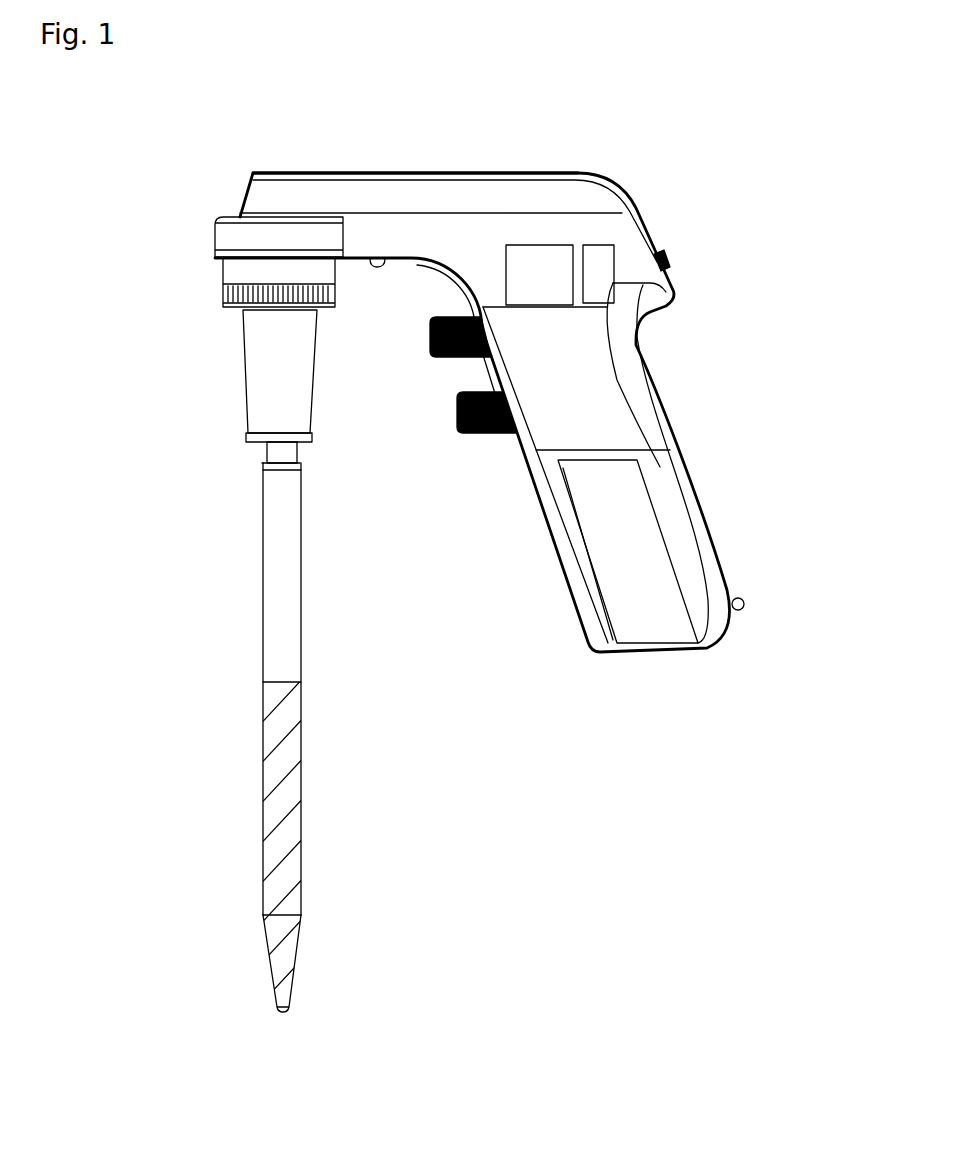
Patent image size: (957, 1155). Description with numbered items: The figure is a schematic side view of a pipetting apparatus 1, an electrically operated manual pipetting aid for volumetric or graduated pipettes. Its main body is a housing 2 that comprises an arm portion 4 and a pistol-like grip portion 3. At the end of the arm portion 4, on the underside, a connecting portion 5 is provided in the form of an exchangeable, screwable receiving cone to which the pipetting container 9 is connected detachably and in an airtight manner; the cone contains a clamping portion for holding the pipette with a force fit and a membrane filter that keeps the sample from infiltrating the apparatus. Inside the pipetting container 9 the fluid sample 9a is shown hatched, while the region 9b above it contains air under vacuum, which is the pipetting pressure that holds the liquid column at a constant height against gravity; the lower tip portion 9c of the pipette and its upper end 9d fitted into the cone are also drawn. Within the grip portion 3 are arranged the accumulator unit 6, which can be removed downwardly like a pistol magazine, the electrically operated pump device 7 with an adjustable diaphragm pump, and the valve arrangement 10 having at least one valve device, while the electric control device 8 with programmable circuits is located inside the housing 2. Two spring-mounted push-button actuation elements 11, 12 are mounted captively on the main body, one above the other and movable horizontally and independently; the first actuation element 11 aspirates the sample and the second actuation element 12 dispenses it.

The pipetting apparatus 1 is at (753, 131).
The housing 2 is at (630, 214).
The grip portion 3 is at (673, 403).
The arm portion 4 is at (415, 172).
The connecting portion 5 is at (222, 303).
The accumulator unit 6 is at (657, 523).
The pump device 7 is at (538, 245).
The control device 8 is at (643, 317).
The pipetting container 9 is at (276, 753).
The fluid sample 9a is at (292, 752).
The region of the pipetting container 9b is at (287, 558).
The tip opening 9c is at (283, 1015).
The flange 9d is at (300, 447).
The valve arrangement 10 is at (647, 380).
The first actuation element 11 is at (430, 338).
The second actuation element 12 is at (455, 410).